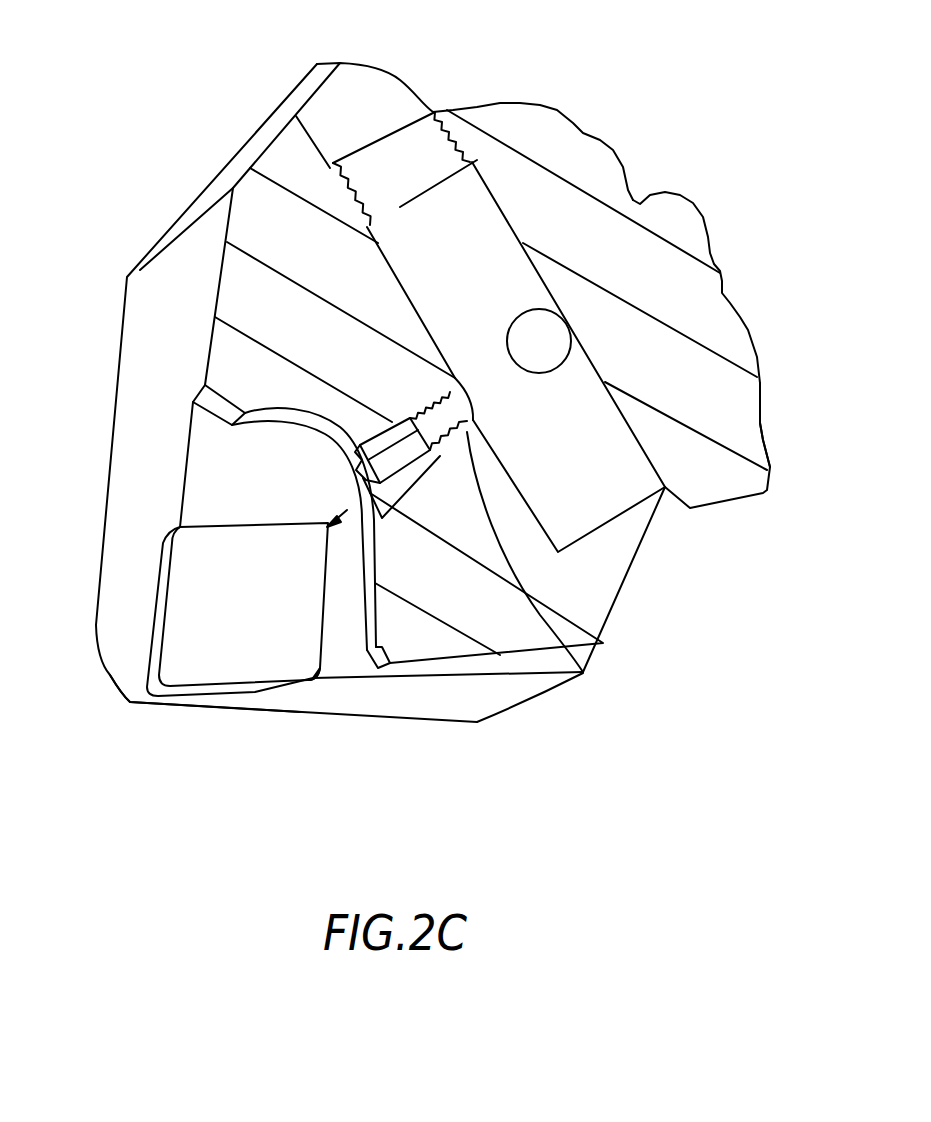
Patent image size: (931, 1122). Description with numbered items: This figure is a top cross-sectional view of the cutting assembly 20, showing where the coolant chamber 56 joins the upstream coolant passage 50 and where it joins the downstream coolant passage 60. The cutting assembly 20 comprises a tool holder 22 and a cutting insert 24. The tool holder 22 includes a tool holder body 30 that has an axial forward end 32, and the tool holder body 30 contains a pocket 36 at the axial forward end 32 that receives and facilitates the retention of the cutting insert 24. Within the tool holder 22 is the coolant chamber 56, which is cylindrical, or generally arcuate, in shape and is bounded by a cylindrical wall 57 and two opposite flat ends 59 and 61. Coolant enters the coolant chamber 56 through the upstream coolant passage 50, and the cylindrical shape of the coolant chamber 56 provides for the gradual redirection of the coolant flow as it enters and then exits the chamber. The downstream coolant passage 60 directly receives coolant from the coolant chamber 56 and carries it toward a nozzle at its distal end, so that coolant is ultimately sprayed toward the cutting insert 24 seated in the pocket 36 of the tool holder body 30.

The cutting assembly 20 is at (673, 103).
The tool holder 22 is at (126, 281).
The cutting insert 24 is at (292, 560).
The tool holder body 30 is at (733, 375).
The axial forward end 32 is at (127, 703).
The pocket 36 is at (318, 623).
The upstream coolant passage 50 is at (565, 333).
The coolant chamber 56 is at (513, 287).
The cylindrical wall 57 is at (635, 432).
The flat end 59 is at (437, 188).
The downstream coolant passage 60 is at (583, 673).
The flat end 61 is at (648, 495).